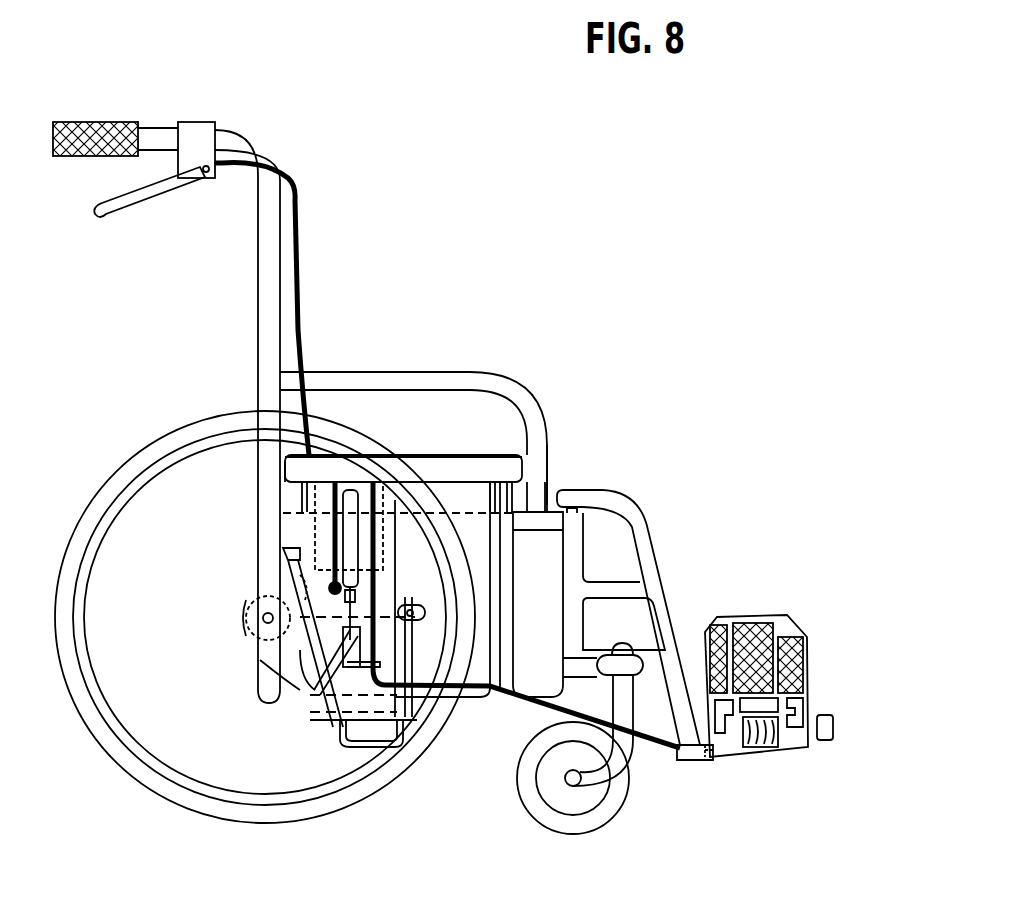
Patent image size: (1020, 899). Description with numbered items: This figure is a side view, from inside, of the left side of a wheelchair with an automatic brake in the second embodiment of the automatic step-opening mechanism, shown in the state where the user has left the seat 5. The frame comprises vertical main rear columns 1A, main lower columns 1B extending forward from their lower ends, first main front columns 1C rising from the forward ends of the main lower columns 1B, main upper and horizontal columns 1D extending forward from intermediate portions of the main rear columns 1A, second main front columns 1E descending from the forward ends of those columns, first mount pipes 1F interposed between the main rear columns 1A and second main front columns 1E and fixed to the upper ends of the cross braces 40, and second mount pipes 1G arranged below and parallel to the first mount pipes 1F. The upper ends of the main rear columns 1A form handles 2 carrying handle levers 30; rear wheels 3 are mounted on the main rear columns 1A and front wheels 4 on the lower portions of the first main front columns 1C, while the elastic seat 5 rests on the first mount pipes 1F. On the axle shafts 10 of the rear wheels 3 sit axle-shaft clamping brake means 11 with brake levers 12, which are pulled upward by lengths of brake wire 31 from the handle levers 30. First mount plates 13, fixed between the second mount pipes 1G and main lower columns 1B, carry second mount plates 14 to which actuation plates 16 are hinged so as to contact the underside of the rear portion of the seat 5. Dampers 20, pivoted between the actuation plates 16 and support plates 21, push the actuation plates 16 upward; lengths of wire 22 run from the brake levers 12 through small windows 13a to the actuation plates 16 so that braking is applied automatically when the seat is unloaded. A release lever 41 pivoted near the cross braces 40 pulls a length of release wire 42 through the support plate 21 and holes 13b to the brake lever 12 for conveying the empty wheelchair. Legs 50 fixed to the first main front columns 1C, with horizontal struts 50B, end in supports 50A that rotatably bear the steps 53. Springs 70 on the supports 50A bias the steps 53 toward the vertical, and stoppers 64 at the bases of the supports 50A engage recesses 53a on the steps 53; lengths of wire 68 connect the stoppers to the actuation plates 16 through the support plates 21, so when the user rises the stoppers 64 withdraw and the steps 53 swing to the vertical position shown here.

The main rear columns 1A is at (258, 275).
The main lower columns 1B is at (487, 703).
The first main front columns 1C is at (575, 575).
The main upper and horizontal columns 1D is at (370, 387).
The second main front columns 1E is at (538, 468).
The first mount pipes 1F is at (512, 468).
The second mount pipes 1G is at (555, 604).
The handles 2 is at (97, 122).
The rear wheels 3 is at (203, 805).
The front wheels 4 is at (580, 822).
The seat 5 is at (452, 458).
The axle shafts 10 is at (265, 622).
The brake means 11 is at (248, 606).
The brake levers 12 is at (423, 613).
The first mount plates 13 is at (300, 690).
The small windows 13a is at (320, 580).
The holes 13b is at (323, 732).
The second mount plates 14 is at (320, 543).
The actuation plates 16 is at (287, 468).
The dampers 20 is at (352, 548).
The support plates 21 is at (353, 730).
The lengths of wire for actuation of braking 22 is at (307, 497).
The handle levers 30 is at (133, 193).
The lengths of brake wire 31 is at (303, 280).
The cross braces 40 is at (303, 652).
The release lever 41 is at (287, 548).
The length of release wire 42 is at (368, 778).
The legs 50 is at (638, 545).
The supports 50A is at (842, 735).
The horizontal struts 50B is at (622, 588).
The steps 53 is at (762, 622).
The recesses 53a is at (718, 765).
The stoppers 64 is at (680, 757).
The lengths of wire for opening of steps 68 is at (375, 582).
The springs 70 is at (750, 760).